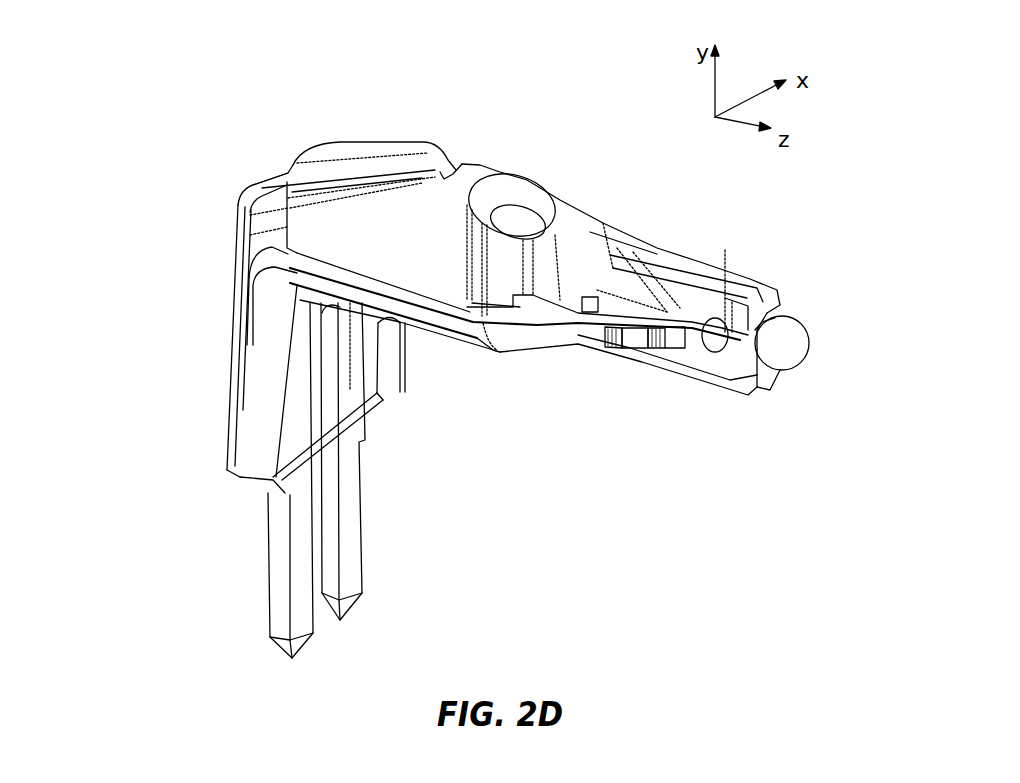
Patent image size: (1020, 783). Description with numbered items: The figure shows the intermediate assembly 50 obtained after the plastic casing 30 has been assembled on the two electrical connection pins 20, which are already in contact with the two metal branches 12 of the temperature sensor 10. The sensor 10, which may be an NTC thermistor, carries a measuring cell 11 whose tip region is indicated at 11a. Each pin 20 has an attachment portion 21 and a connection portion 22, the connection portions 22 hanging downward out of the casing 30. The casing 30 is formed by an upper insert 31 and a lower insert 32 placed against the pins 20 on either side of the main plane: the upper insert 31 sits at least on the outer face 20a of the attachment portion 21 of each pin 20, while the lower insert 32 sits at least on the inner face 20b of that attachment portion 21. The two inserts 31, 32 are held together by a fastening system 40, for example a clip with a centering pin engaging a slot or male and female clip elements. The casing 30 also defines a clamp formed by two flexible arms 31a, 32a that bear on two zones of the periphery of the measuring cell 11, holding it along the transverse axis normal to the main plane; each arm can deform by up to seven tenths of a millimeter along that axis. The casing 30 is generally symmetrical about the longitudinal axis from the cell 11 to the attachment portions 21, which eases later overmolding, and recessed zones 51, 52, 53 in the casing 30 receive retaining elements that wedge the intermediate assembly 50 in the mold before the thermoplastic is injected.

The temperature sensor 10 is at (787, 398).
The measuring cell 11 is at (777, 360).
The pin tip 11a is at (810, 347).
The metal branches 12 is at (632, 282).
The electrical connection pins 20 is at (247, 476).
The attachment portion 21 is at (438, 294).
The connection portion 22 is at (278, 537).
The outer face 20a is at (207, 139).
The inner face 20b is at (432, 442).
The plastic casing 30 is at (627, 441).
The upper insert 31 is at (563, 266).
The lower insert 32 is at (511, 333).
The flexible arm 31a is at (687, 292).
The flexible arm 32a is at (678, 358).
The fastening system 40 is at (590, 287).
The intermediate assembly 50 is at (783, 263).
The recessed zone 51 is at (209, 259).
The recessed zone 52 is at (346, 385).
The recessed zone 53 is at (440, 173).